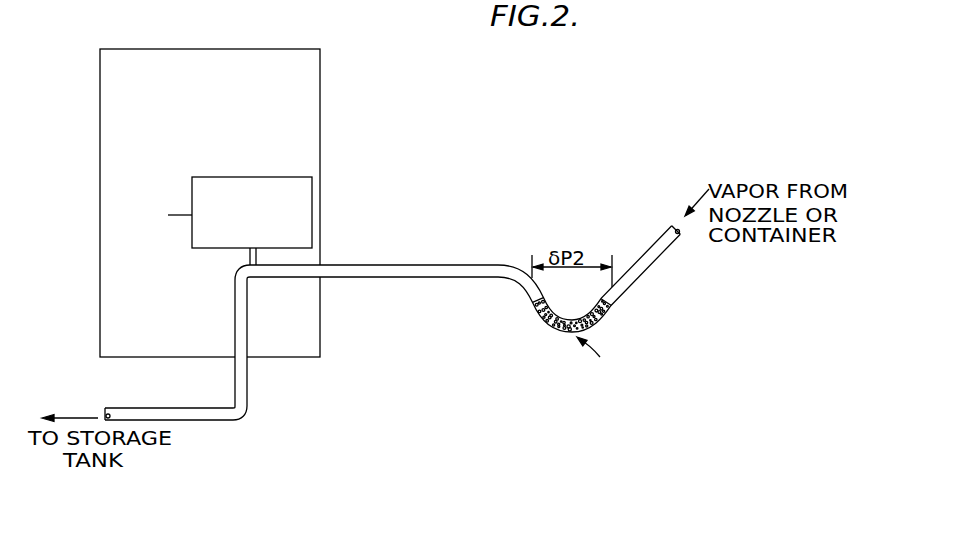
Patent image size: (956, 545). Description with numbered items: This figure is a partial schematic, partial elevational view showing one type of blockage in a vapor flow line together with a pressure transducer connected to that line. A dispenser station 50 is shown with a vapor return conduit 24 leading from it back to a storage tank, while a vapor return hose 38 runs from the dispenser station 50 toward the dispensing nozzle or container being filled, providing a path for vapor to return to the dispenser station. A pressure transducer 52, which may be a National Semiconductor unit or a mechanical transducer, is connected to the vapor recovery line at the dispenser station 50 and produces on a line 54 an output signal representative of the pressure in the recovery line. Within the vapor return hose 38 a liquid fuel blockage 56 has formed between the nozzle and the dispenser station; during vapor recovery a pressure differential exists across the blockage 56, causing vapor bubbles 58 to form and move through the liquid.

The dispenser station 50 is at (327, 137).
The pressure transducer 52 is at (212, 249).
The line 54 is at (179, 215).
The vapor return hose 38 is at (438, 272).
The vapor return conduit 24 is at (238, 373).
The liquid fuel blockage 56 is at (676, 351).
The vapor bubbles 58 is at (557, 322).